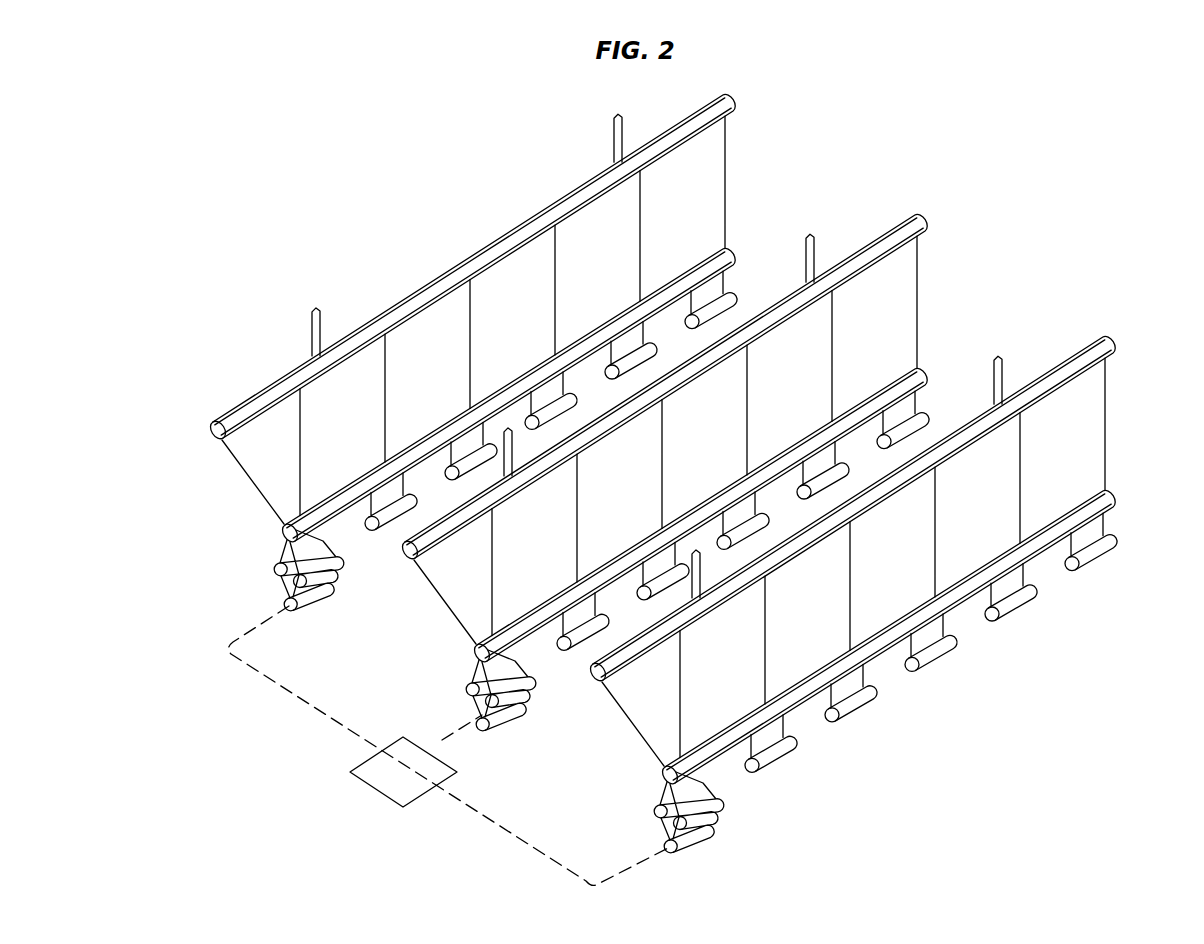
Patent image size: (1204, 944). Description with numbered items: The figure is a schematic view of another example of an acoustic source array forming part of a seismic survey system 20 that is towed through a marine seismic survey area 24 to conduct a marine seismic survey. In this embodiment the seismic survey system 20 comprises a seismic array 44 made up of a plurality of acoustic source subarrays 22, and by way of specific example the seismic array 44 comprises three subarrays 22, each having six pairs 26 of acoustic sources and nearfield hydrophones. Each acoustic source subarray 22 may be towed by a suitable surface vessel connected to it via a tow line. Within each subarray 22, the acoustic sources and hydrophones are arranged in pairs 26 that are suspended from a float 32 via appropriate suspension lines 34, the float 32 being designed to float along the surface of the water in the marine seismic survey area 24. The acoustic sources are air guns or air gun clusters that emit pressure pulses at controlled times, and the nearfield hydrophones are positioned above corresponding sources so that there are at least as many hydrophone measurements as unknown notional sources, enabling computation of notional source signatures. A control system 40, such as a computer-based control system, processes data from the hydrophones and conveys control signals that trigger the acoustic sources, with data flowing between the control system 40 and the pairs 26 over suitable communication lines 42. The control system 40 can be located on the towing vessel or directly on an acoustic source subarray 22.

The seismic survey system 20 is at (432, 237).
The acoustic source subarray 22 is at (225, 507).
The marine seismic survey area 24 is at (1180, 409).
The pairs of acoustic sources and hydrophones 26 is at (338, 589).
The float 32 is at (532, 218).
The suspension lines 34 is at (385, 416).
The control system 40 is at (390, 786).
The communication lines 42 is at (310, 710).
The seismic array 44 is at (935, 171).